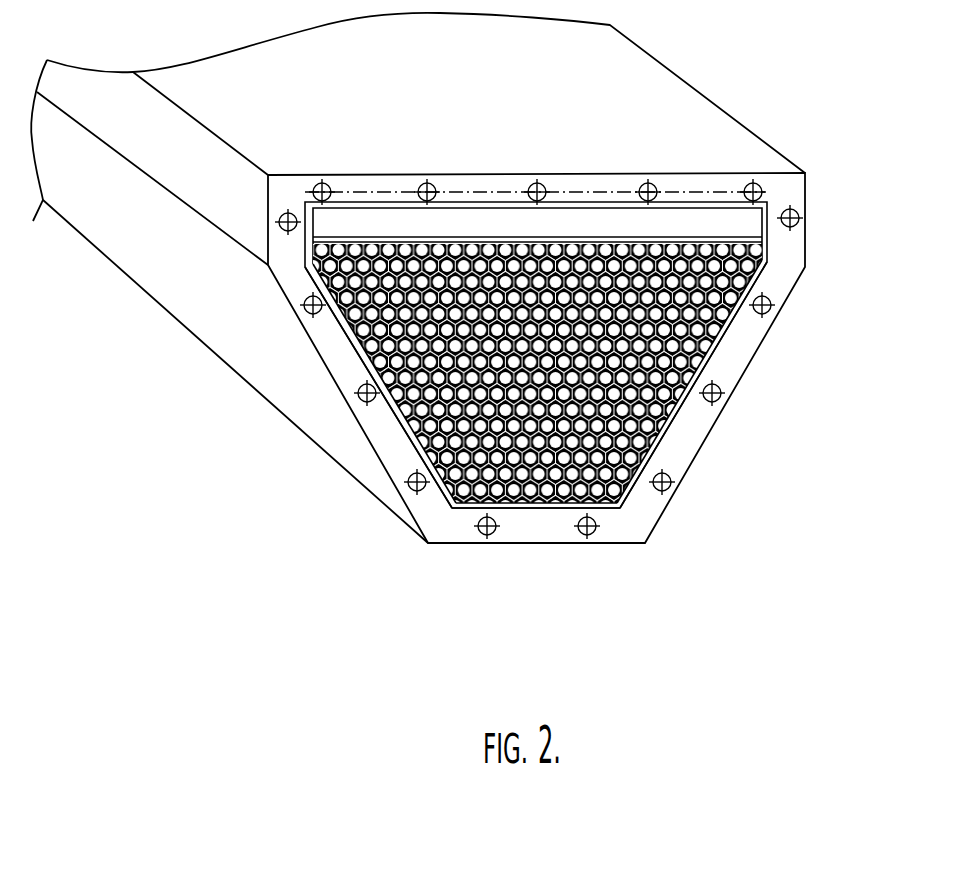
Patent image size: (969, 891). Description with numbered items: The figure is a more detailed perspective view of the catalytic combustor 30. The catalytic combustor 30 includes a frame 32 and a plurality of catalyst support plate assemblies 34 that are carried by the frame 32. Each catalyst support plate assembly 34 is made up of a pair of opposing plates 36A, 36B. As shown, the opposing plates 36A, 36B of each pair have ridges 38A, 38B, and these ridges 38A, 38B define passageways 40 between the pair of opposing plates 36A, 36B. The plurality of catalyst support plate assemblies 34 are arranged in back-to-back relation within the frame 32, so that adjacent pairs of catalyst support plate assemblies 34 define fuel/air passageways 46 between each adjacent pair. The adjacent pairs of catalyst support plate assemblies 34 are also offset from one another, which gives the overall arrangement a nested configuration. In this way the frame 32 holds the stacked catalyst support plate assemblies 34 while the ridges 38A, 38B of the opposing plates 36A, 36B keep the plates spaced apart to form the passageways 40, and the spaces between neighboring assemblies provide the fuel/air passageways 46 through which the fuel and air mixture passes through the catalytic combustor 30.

The catalytic combustor 30 is at (737, 110).
The frame 32 is at (237, 213).
The catalyst support plate assemblies 34 is at (397, 335).
The opposing plate 36A is at (470, 484).
The opposing plate 36B is at (517, 502).
The ridges 38A is at (468, 499).
The ridges 38B is at (465, 502).
The passageways 40 is at (623, 491).
The fuel/air passageways 46 is at (320, 264).